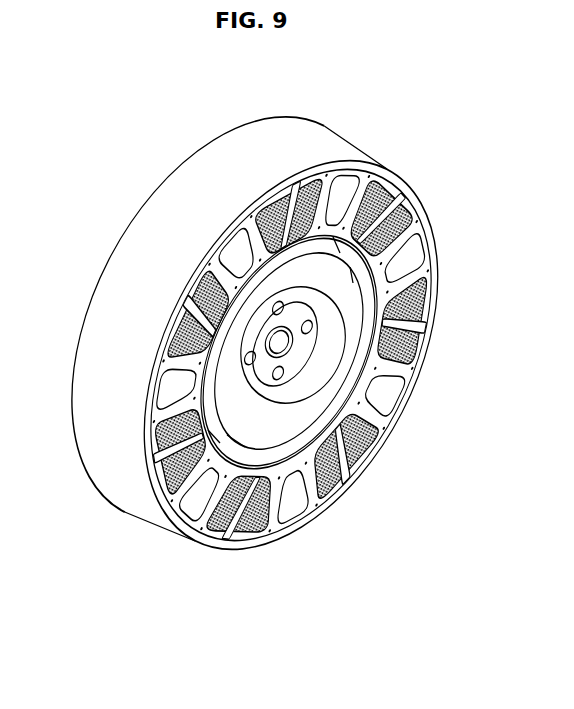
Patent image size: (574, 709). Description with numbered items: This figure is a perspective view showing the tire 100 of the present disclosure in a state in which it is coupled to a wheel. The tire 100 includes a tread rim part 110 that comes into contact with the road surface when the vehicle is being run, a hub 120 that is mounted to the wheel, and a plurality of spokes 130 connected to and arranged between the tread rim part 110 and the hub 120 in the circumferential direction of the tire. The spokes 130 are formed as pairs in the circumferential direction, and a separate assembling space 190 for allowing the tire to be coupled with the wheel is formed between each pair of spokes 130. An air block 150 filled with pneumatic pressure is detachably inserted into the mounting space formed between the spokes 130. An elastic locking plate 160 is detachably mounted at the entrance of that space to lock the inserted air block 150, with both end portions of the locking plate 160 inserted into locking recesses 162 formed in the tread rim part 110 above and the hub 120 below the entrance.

The tire 100 is at (148, 166).
The tread rim part 110 is at (143, 243).
The hub 120 is at (353, 360).
The spokes 130 is at (262, 218).
The air block 150 is at (265, 212).
The locking plate 160 is at (297, 188).
The locking recesses 162 is at (343, 177).
The assembling space 190 is at (185, 503).